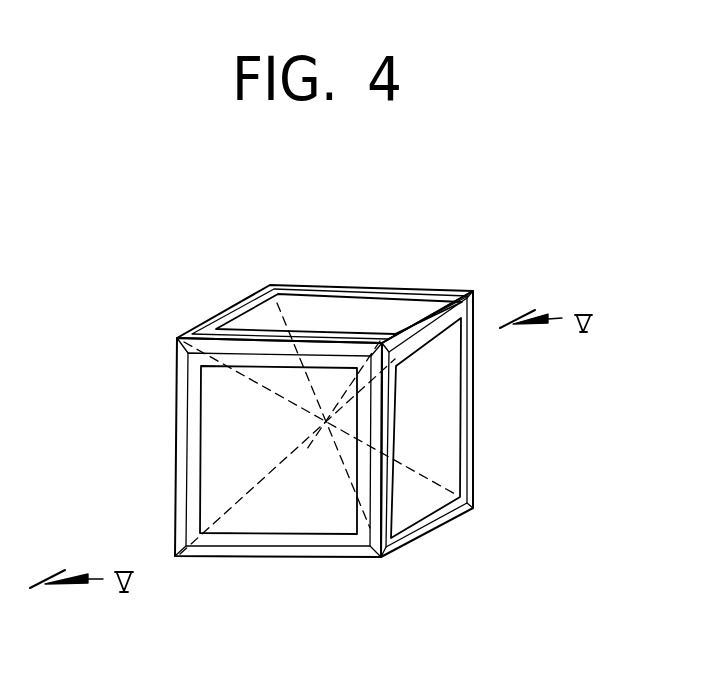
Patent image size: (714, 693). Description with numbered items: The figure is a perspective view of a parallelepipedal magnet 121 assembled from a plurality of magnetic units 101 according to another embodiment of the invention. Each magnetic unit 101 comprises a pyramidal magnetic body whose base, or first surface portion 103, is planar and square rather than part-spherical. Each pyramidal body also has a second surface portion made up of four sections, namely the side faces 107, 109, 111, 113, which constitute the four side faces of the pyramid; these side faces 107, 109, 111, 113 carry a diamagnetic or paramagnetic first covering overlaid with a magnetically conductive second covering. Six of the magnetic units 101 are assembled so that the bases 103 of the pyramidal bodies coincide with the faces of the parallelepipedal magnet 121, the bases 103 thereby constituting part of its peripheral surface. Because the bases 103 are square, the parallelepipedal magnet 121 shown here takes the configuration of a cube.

The parallelepipedal magnet 121 is at (440, 252).
The magnetic unit 101 is at (447, 470).
The base 103 is at (443, 390).
The side face 107 is at (223, 430).
The side face 109 is at (302, 502).
The side face 111 is at (397, 513).
The side face 113 is at (278, 378).